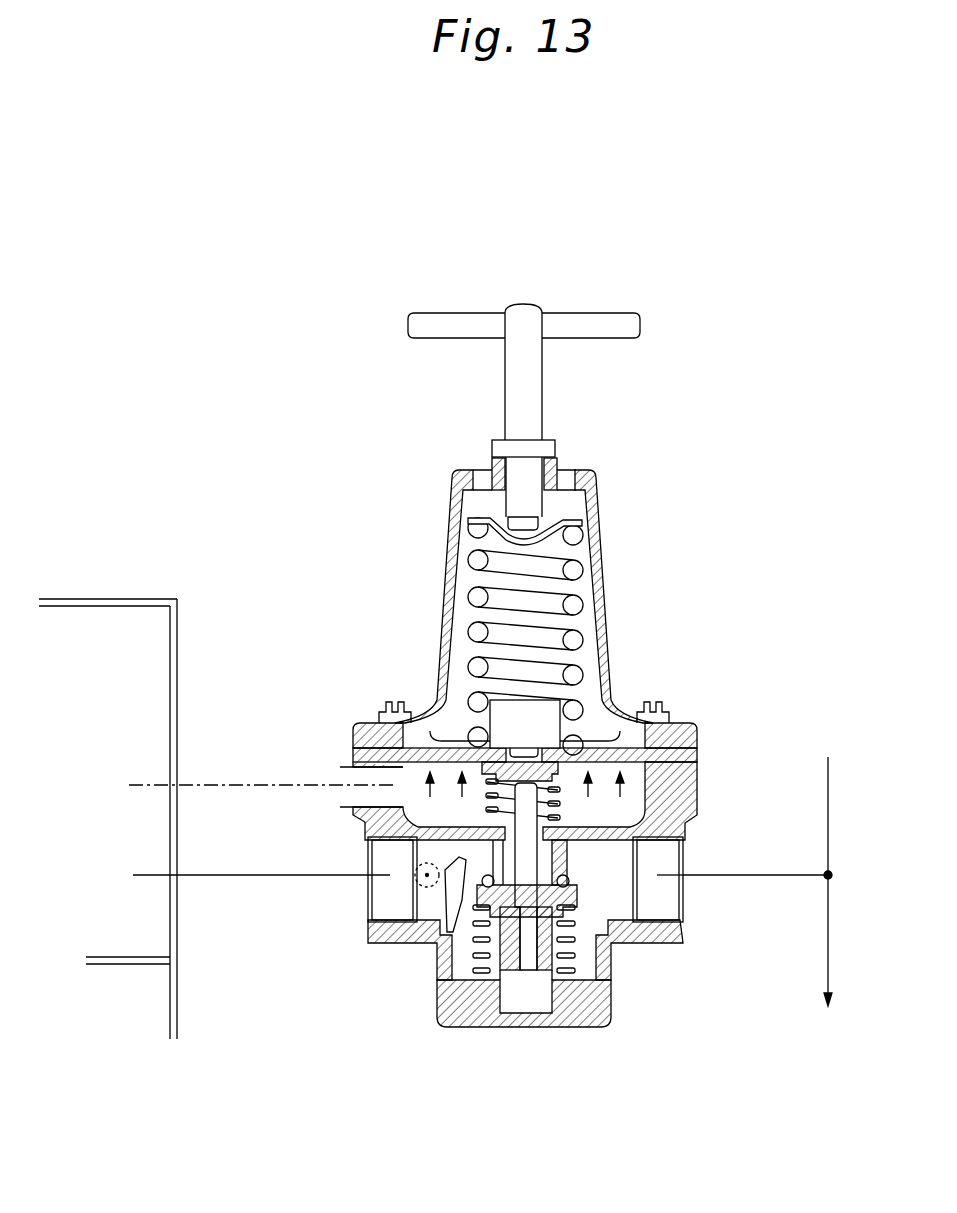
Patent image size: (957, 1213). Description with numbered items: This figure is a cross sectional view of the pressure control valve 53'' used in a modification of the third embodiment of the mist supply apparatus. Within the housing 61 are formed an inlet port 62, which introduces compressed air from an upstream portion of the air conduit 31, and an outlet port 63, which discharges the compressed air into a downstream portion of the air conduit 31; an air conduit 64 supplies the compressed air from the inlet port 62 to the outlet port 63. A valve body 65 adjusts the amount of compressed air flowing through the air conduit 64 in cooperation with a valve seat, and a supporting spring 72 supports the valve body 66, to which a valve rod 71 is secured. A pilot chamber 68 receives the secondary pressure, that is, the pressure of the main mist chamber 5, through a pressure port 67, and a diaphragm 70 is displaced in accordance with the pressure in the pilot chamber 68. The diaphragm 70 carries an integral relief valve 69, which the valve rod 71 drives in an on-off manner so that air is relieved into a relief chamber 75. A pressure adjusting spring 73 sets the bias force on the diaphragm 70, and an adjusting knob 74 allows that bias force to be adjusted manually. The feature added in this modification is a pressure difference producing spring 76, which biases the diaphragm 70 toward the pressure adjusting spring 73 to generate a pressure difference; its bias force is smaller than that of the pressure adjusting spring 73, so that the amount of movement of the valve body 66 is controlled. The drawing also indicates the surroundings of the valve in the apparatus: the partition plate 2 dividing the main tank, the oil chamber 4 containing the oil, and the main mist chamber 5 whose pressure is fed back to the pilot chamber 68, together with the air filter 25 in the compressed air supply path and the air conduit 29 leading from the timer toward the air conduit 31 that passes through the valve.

The adjusting knob 74 is at (458, 325).
The pressure control valve 53'' is at (574, 595).
The relief valve 69 is at (617, 740).
The relief chamber 75 is at (455, 695).
The pressure adjusting spring 73 is at (597, 532).
The diaphragm 70 is at (680, 752).
The housing 61 is at (683, 774).
The pressure port 67 is at (392, 775).
The pilot chamber 68 is at (417, 813).
The pressure difference producing spring 76 is at (557, 798).
The valve body 65 is at (560, 868).
The outlet port 63 is at (390, 898).
The inlet port 62 is at (660, 903).
The valve rod 71 is at (524, 864).
The air conduit 64 is at (587, 917).
The valve body 66 is at (543, 963).
The supporting spring 72 is at (478, 975).
The main mist chamber 5 is at (97, 598).
The oil chamber 4 is at (149, 1007).
The partition plate 2 is at (105, 957).
The air filter 25 is at (202, 783).
The air conduit 29 is at (828, 773).
The air conduit 31 is at (808, 873).